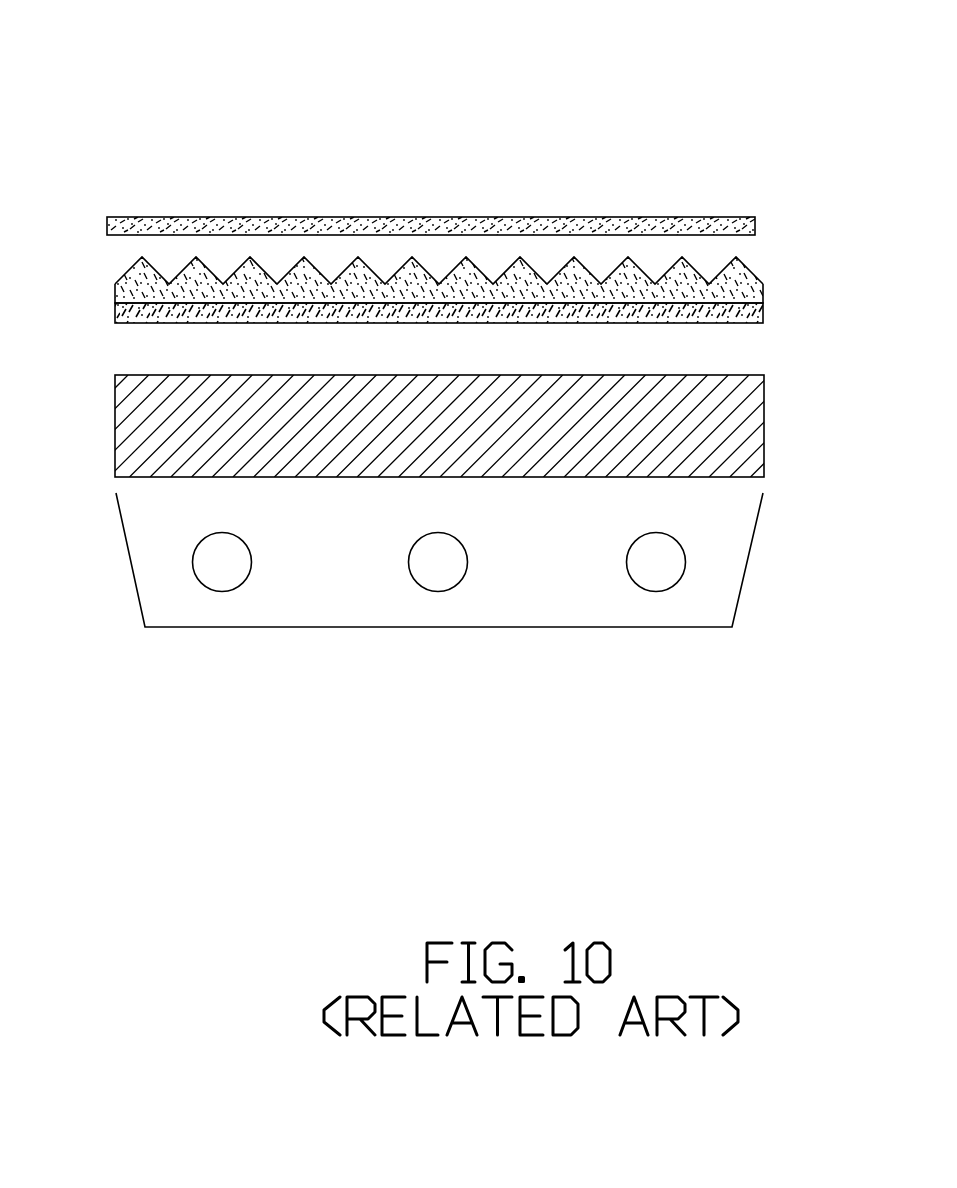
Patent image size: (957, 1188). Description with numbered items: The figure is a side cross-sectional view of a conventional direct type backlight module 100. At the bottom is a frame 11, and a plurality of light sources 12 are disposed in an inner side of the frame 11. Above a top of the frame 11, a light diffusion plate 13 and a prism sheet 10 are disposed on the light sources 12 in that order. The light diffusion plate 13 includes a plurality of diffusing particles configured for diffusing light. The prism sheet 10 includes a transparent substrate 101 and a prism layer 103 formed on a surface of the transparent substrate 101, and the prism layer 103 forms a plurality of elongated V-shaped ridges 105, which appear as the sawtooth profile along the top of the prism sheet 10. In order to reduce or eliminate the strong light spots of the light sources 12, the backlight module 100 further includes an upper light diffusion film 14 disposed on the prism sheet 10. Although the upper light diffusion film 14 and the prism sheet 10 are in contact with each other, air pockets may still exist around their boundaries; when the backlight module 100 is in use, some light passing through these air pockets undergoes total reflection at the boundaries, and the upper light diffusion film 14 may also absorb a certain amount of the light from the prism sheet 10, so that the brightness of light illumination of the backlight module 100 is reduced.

The direct type backlight module 100 is at (363, 68).
The prism sheet 10 is at (845, 268).
The transparent substrate 101 is at (748, 318).
The prism layer 103 is at (740, 299).
The elongated V-shaped ridges 105 is at (137, 262).
The frame 11 is at (747, 573).
The light sources 12 is at (663, 553).
The light diffusion plate 13 is at (764, 423).
The upper light diffusion film 14 is at (755, 218).